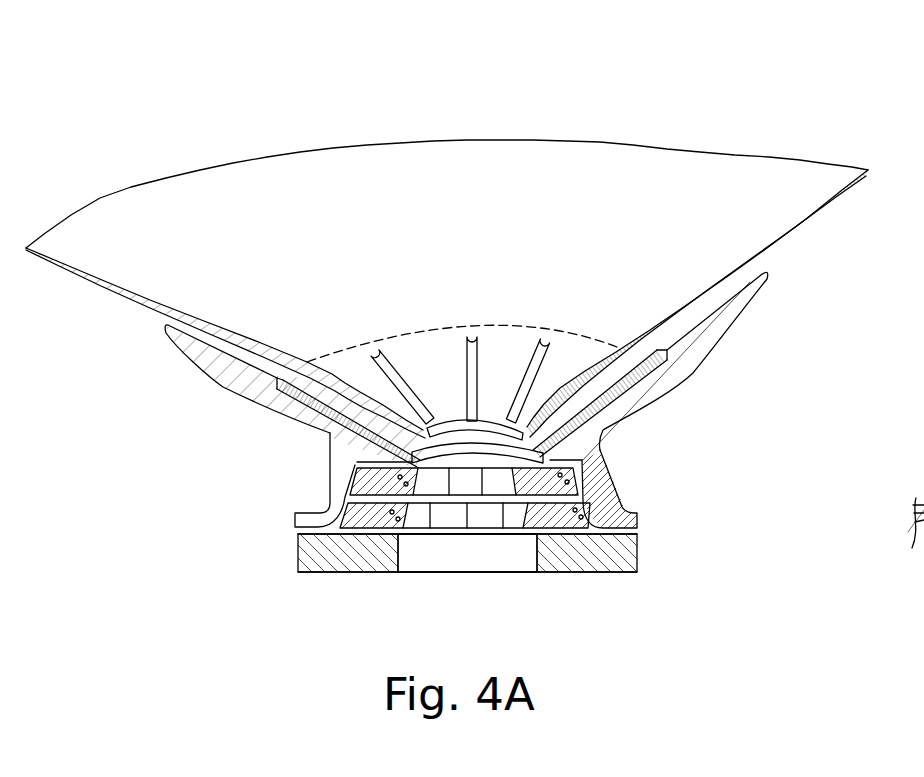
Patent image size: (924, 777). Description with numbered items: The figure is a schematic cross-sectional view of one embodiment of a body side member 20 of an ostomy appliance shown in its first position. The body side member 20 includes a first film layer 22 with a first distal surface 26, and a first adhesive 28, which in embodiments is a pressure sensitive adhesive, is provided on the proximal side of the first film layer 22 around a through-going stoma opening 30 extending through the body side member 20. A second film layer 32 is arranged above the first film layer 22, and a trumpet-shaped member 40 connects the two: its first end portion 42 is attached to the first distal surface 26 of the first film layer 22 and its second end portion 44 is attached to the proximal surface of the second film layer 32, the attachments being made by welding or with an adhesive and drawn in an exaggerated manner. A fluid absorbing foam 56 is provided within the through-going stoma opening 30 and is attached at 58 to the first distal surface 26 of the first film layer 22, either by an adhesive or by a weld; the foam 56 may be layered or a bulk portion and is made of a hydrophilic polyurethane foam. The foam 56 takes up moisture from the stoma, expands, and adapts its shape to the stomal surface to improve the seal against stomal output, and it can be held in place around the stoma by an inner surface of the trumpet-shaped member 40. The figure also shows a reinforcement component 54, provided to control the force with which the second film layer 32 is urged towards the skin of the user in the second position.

The body side member 20 is at (755, 82).
The first film layer 22 is at (469, 599).
The first distal surface 26 is at (298, 533).
The first adhesive 28 is at (578, 580).
The through-going stoma opening 30 is at (478, 552).
The second film layer 32 is at (797, 232).
The trumpet-shaped member 40 is at (337, 495).
The first end portion 42 is at (625, 514).
The second end portion 44 is at (728, 325).
The reinforcement component 54 is at (642, 387).
The fluid absorbing foam 56 is at (357, 463).
The attachment of the foam 58 is at (390, 530).